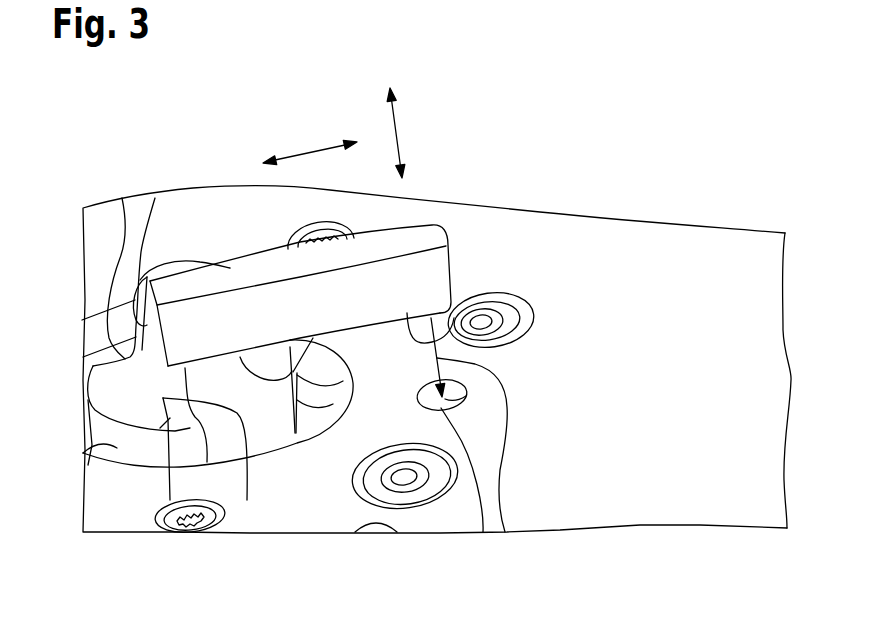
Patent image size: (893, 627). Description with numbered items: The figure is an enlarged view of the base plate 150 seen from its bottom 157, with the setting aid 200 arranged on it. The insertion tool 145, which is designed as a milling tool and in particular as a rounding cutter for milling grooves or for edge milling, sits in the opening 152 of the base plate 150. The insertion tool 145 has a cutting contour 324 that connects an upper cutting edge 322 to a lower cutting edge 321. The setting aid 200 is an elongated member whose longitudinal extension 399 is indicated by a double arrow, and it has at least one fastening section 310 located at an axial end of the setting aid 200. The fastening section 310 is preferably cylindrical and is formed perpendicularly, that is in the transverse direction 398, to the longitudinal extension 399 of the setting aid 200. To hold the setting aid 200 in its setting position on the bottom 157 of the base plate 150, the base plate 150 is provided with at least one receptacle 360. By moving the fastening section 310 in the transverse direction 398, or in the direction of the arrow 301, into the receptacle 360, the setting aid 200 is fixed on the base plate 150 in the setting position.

The insertion tool 145 is at (247, 500).
The base plate 150 is at (673, 275).
The opening 152 is at (108, 450).
The bottom 157 is at (750, 254).
The setting aid 200 is at (402, 238).
The arrow 301 is at (505, 532).
The fastening section 310 is at (487, 297).
The lower cutting edge 321 is at (170, 500).
The upper cutting edge 322 is at (155, 198).
The cutting contour 324 is at (123, 198).
The receptacle 360 is at (483, 532).
The transverse direction 398 is at (395, 128).
The longitudinal extension 399 is at (308, 152).